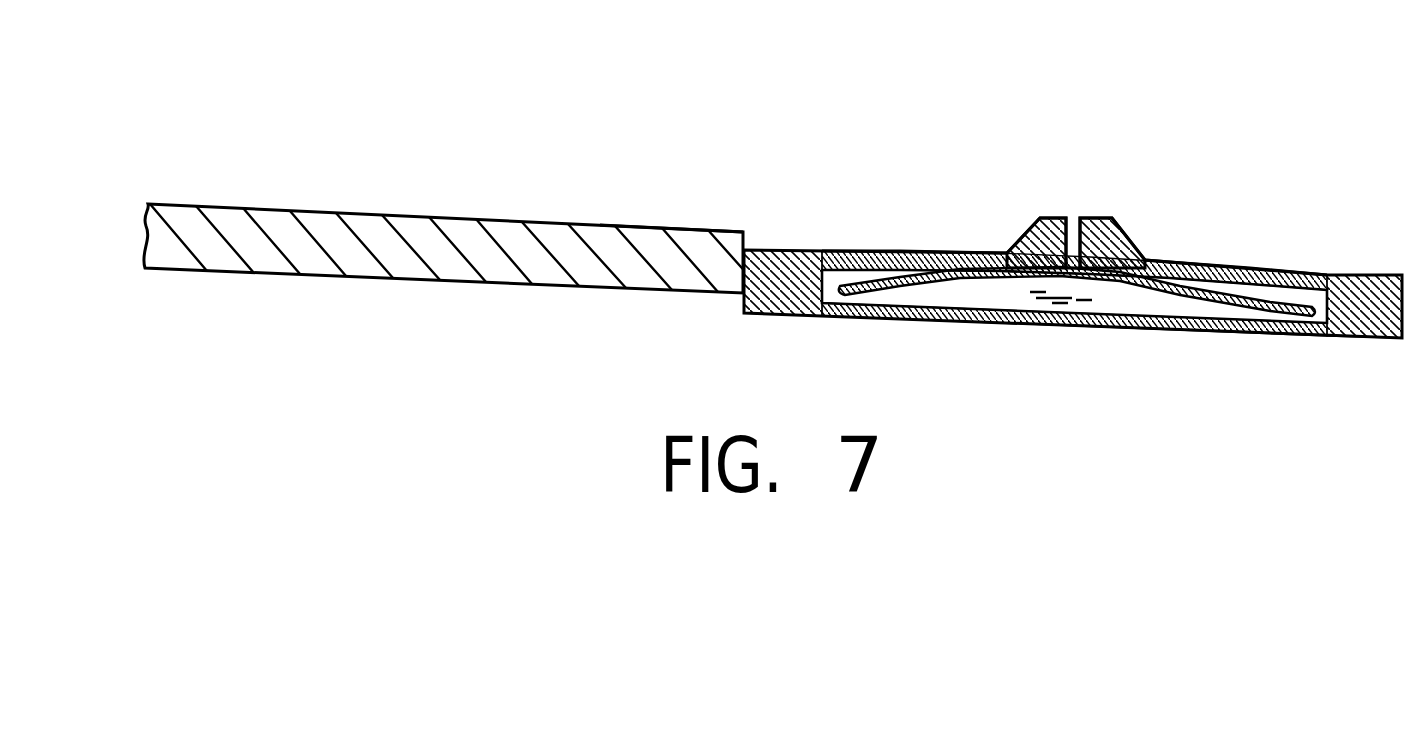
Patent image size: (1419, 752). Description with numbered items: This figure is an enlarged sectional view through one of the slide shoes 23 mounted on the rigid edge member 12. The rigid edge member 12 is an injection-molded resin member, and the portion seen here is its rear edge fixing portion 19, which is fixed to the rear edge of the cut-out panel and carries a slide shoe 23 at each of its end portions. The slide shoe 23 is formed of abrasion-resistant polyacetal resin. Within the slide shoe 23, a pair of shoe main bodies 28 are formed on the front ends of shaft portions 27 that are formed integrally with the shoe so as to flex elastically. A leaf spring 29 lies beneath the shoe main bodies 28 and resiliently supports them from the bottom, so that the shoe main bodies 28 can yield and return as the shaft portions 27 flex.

The rigid edge member 12 is at (398, 214).
The rear edge fixing portion 19 is at (644, 227).
The slide shoe 23 is at (1238, 269).
The shaft portion 27 is at (947, 252).
The shoe main body 28 is at (1050, 218).
The leaf spring 29 is at (1156, 272).